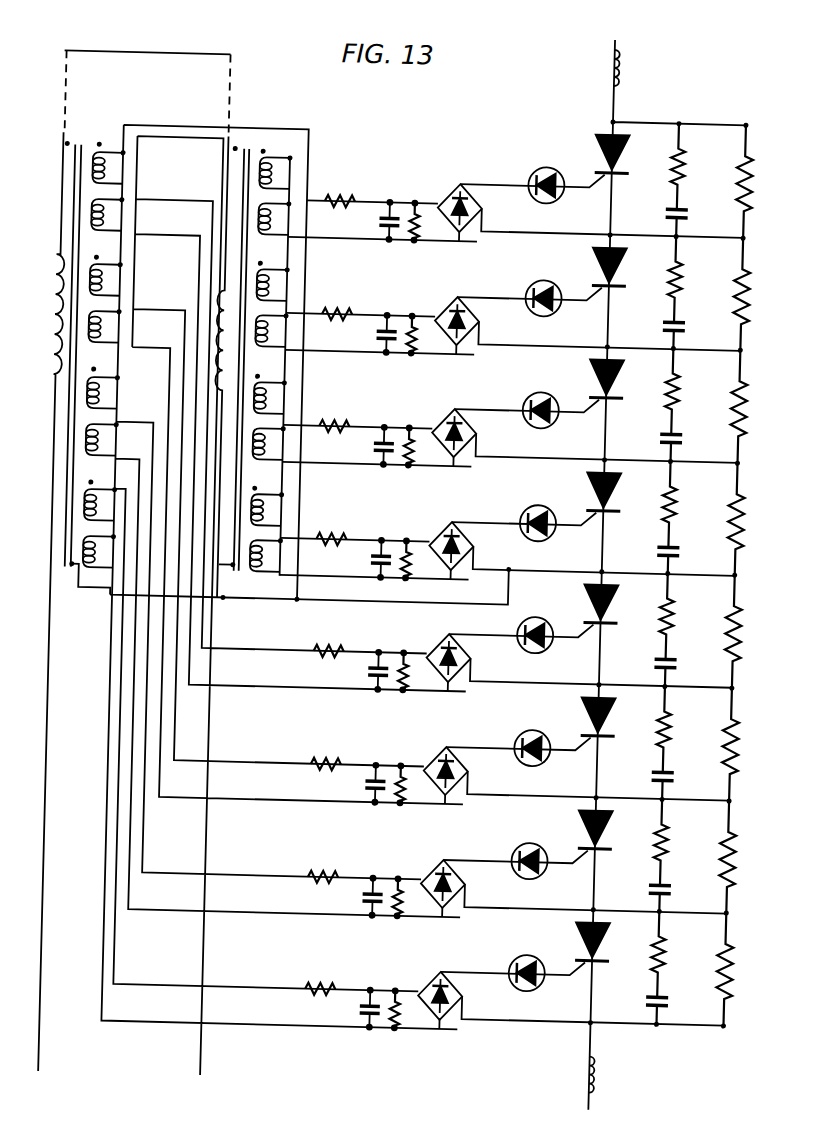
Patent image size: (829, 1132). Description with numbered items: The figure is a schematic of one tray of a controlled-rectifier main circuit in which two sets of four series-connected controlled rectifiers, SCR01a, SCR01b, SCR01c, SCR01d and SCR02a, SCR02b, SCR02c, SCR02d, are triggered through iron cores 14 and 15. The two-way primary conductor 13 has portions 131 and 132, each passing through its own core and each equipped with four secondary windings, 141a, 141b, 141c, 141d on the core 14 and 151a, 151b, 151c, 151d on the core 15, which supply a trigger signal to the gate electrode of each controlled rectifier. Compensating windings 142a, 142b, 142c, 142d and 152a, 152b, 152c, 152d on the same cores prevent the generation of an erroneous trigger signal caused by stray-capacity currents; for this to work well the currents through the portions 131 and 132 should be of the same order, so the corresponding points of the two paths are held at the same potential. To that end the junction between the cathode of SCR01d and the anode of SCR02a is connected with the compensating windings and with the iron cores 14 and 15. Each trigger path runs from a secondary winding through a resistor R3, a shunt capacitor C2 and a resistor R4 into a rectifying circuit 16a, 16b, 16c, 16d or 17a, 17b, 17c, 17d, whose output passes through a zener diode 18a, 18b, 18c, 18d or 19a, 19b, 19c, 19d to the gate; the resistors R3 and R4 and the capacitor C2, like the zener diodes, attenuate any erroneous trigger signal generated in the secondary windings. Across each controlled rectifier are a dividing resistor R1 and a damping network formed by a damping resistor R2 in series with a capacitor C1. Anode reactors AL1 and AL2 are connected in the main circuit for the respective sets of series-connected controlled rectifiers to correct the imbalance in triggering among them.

The primary conductor 13 is at (160, 64).
The iron core 14 is at (247, 156).
The iron core 15 is at (78, 160).
The primary conductor portion 131 is at (224, 196).
The primary conductor portion 132 is at (63, 184).
The compensating winding 152a is at (105, 187).
The secondary winding 151a is at (105, 238).
The compensating winding 152b is at (105, 296).
The secondary winding 151b is at (105, 347).
The compensating winding 152c is at (92, 404).
The secondary winding 151c is at (92, 461).
The compensating winding 152d is at (90, 521).
The secondary winding 151d is at (108, 590).
The compensating winding 142a is at (272, 181).
The secondary winding 141a is at (272, 232).
The compensating winding 142b is at (272, 294).
The secondary winding 141b is at (272, 345).
The compensating winding 142c is at (272, 407).
The secondary winding 141c is at (272, 458).
The compensating winding 142d is at (272, 520).
The secondary winding 141d is at (294, 580).
The rectifying circuit 16a is at (460, 191).
The rectifying circuit 16b is at (456, 309).
The rectifying circuit 16c is at (453, 421).
The rectifying circuit 16d is at (451, 534).
The rectifying circuit 17a is at (439, 646).
The rectifying circuit 17b is at (434, 760).
The rectifying circuit 17c is at (431, 875).
The rectifying circuit 17d is at (430, 988).
The zener diode 18a is at (543, 170).
The zener diode 18b is at (533, 292).
The zener diode 18c is at (527, 404).
The zener diode 18d is at (526, 534).
The zener diode 19a is at (519, 644).
The zener diode 19b is at (513, 757).
The zener diode 19c is at (513, 869).
The zener diode 19d is at (508, 981).
The controlled rectifier SCR01a is at (579, 136).
The controlled rectifier SCR01b is at (568, 262).
The controlled rectifier SCR01c is at (559, 373).
The controlled rectifier SCR01d is at (560, 486).
The controlled rectifier SCR02a is at (567, 606).
The controlled rectifier SCR02b is at (560, 715).
The controlled rectifier SCR02c is at (554, 828).
The controlled rectifier SCR02d is at (550, 940).
The dividing resistor R1 is at (740, 178).
The damping resistor R2 is at (690, 158).
The resistor R3 is at (341, 205).
The resistor R4 is at (422, 230).
The capacitor C1 is at (668, 212).
The capacitor C2 is at (382, 231).
The anode reactor AL1 is at (623, 72).
The anode reactor AL2 is at (622, 1075).